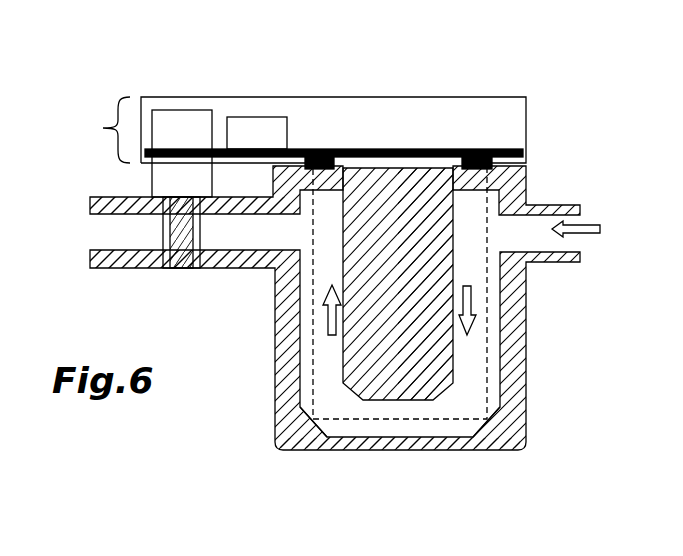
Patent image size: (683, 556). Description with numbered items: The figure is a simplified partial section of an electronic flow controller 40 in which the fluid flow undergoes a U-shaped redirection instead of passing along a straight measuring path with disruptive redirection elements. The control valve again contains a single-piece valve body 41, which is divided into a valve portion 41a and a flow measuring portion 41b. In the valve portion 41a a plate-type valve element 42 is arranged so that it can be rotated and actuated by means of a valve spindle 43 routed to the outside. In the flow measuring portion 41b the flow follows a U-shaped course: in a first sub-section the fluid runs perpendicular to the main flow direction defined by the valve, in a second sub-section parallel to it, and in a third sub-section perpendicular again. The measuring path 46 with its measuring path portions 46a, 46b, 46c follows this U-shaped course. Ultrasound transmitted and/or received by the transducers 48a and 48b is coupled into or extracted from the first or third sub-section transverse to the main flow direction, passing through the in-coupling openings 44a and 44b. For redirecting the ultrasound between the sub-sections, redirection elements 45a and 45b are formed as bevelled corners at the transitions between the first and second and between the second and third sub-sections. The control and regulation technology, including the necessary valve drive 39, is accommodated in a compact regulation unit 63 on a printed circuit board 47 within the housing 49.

The valve drive 39 is at (178, 135).
The electronic flow controller 40 is at (553, 117).
The valve body 41 is at (525, 352).
The valve portion 41a is at (273, 277).
The flow measuring portion 41b is at (582, 455).
The valve element 42 is at (180, 240).
The valve spindle 43 is at (163, 198).
The in-coupling opening 44a is at (342, 190).
The in-coupling opening 44b is at (465, 190).
The redirection element 45a is at (310, 420).
The redirection element 45b is at (490, 420).
The measuring path 46 is at (390, 417).
The measuring path portion 46a is at (487, 295).
The measuring path portion 46b is at (352, 420).
The measuring path portion 46c is at (313, 350).
The printed circuit board 47 is at (255, 150).
The transducer 48a is at (320, 157).
The transducer 48b is at (478, 160).
The housing 49 is at (523, 133).
The regulation unit 63 is at (95, 130).